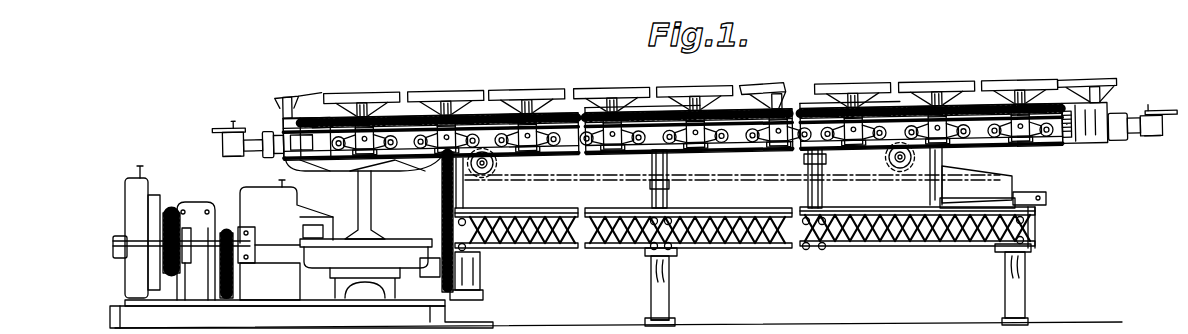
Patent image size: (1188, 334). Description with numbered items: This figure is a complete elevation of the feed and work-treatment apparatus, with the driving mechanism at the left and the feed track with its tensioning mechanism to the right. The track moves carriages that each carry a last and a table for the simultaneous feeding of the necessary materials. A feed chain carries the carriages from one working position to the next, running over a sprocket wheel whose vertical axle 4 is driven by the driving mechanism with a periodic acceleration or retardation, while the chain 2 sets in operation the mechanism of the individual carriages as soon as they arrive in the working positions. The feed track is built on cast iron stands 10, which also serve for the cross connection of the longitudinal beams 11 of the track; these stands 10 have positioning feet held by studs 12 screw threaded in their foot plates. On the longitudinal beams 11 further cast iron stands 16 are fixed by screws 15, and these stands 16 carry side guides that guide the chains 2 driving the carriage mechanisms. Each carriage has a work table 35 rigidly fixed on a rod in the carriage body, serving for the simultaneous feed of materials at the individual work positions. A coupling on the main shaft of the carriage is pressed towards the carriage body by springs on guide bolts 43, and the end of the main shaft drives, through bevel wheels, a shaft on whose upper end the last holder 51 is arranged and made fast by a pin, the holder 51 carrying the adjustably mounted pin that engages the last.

The chain 2 is at (548, 179).
The vertical axle 4 is at (367, 212).
The cast iron stand 10 is at (666, 286).
The longitudinal beam 11 is at (553, 248).
The stud 12 is at (664, 318).
The screw 15 is at (668, 196).
The cast iron stand 16 is at (808, 194).
The work table 35 is at (298, 96).
The guide bolt 43 is at (252, 138).
The last holder 51 is at (218, 127).